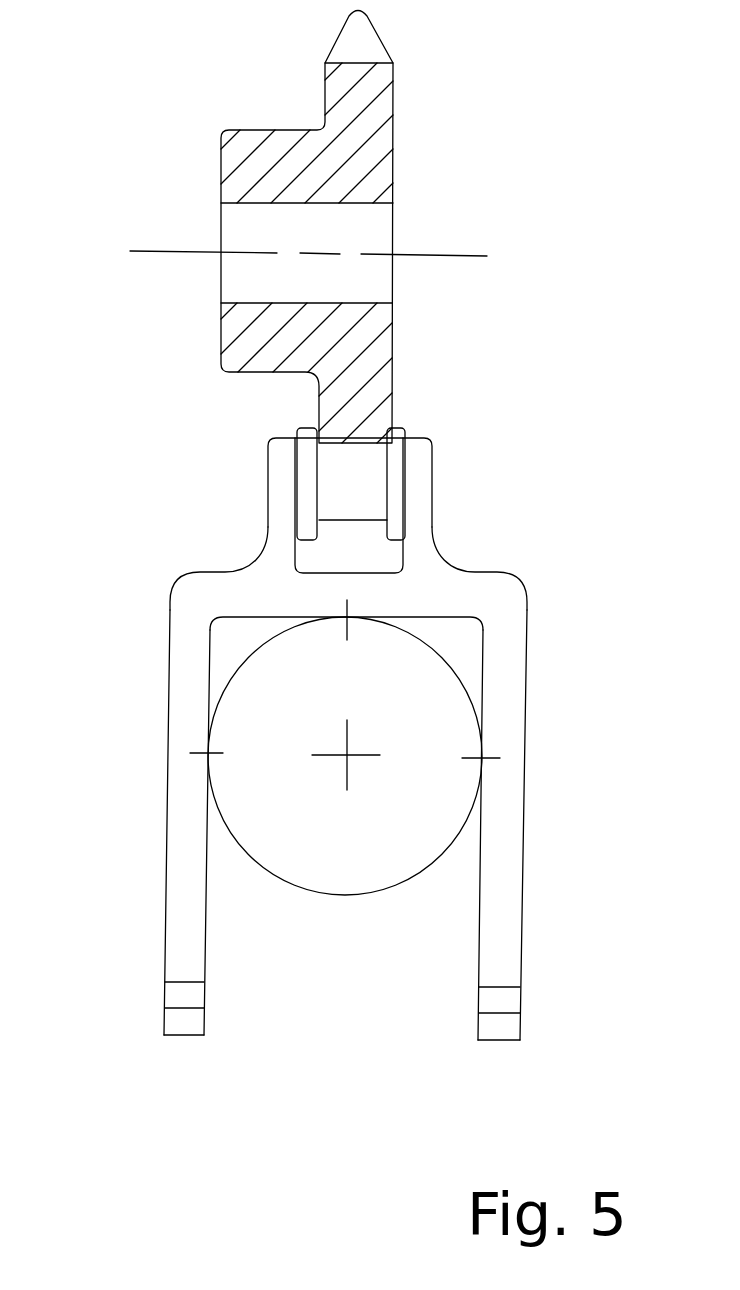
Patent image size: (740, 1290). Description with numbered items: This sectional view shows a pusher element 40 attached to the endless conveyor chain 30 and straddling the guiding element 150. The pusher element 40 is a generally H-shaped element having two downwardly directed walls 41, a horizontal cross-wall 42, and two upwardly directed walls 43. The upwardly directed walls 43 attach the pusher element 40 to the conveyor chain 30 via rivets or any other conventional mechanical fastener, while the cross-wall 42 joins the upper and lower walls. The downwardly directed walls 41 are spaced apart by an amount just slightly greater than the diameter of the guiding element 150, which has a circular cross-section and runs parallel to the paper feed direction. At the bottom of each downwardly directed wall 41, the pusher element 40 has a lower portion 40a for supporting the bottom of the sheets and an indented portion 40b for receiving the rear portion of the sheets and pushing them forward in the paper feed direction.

The conveyor chain 30 is at (358, 478).
The pusher element 40 is at (236, 513).
The downwardly directed walls 41 is at (180, 857).
The horizontal cross-wall 42 is at (292, 590).
The upwardly directed walls 43 is at (280, 463).
The lower portion 40a is at (173, 1020).
The indented portion 40b is at (177, 997).
The guiding element 150 is at (258, 675).